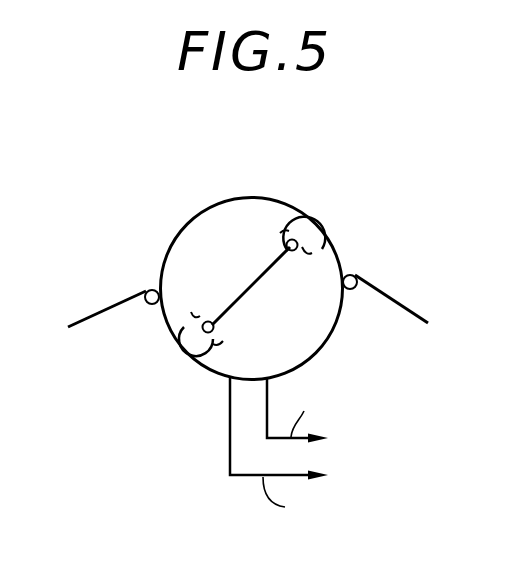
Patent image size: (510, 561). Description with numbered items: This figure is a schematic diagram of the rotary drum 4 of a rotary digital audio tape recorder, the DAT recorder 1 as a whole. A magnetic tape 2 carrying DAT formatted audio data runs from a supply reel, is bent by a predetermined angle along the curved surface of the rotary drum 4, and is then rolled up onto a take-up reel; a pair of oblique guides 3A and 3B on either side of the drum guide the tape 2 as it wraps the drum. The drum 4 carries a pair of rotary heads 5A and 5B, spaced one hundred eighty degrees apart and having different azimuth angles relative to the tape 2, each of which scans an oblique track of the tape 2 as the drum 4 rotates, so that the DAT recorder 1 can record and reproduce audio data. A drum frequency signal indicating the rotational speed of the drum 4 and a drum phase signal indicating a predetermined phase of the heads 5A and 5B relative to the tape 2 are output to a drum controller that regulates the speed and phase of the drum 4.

The DAT recorder 1 is at (162, 137).
The magnetic tape 2 is at (106, 306).
The oblique guide 3A is at (151, 305).
The oblique guide 3B is at (350, 290).
The rotary drum 4 is at (284, 202).
The rotary head 5A is at (193, 317).
The rotary head 5B is at (297, 255).